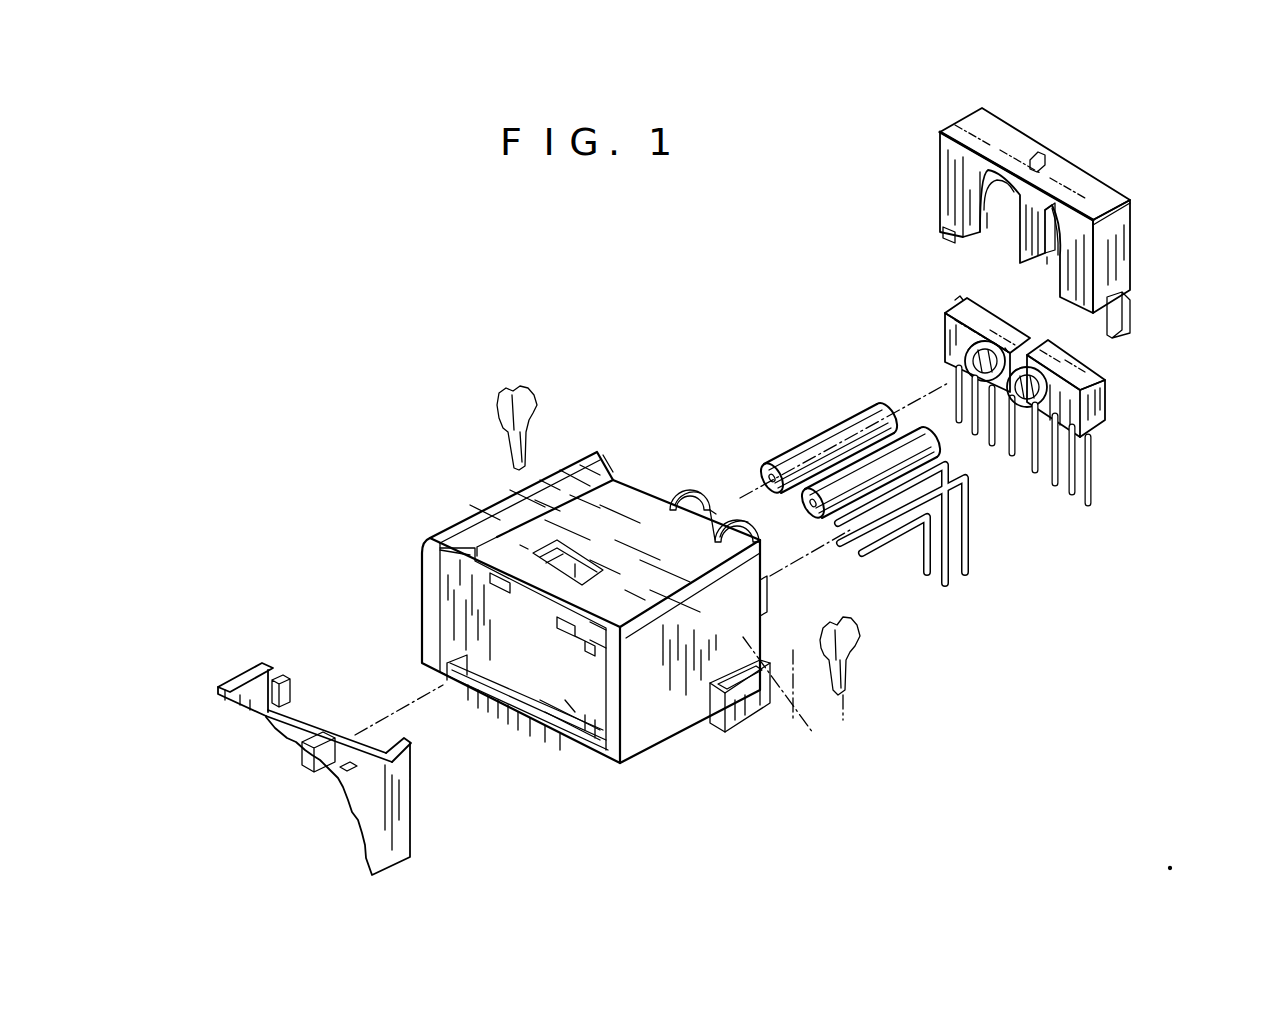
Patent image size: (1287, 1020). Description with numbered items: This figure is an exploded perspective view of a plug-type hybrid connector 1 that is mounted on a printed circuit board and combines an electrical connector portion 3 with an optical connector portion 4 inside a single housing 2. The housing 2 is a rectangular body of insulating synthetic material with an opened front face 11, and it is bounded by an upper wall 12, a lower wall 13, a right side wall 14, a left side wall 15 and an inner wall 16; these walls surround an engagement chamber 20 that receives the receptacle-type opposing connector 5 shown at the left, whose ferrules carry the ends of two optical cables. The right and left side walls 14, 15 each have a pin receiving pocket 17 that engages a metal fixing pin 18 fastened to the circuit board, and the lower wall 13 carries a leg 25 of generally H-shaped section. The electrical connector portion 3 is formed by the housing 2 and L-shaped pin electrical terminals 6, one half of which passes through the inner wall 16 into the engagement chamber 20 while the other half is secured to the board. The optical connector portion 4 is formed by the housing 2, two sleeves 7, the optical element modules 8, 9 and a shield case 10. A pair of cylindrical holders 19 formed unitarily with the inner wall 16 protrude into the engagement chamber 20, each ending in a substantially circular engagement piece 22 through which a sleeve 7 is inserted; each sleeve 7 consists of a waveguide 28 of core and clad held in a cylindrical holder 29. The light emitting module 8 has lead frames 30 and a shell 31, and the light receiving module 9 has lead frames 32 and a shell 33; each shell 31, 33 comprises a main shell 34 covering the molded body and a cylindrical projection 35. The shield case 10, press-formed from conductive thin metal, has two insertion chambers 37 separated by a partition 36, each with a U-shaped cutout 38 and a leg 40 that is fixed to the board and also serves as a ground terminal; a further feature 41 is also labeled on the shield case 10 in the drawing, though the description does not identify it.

The hybrid connector 1 is at (778, 178).
The housing 2 is at (580, 621).
The electrical connector portion 3 is at (915, 598).
The optical connector portion 4 is at (842, 373).
The opposing connector 5 is at (240, 668).
The electrical terminal 6 is at (975, 532).
The sleeve 7 is at (836, 476).
The optical element module 8 is at (1108, 410).
The optical element module 9 is at (947, 310).
The shield case 10 is at (1041, 209).
The opened front face 11 is at (553, 723).
The upper wall 12 is at (593, 487).
The lower wall 13 is at (600, 748).
The right side wall 14 is at (673, 713).
The left side wall 15 is at (453, 593).
The inner wall 16 is at (655, 497).
The pin receiving pocket 17 is at (740, 703).
The fixing pin 18 is at (515, 392).
The cylindrical holder 19 is at (683, 505).
The engagement chamber 20 is at (547, 672).
The engagement piece 22 is at (706, 512).
The leg 25 is at (768, 593).
The waveguide 28 is at (840, 493).
The cylindrical holder 29 is at (822, 433).
The lead frame 30 is at (1095, 476).
The shell 31 is at (1126, 427).
The lead frame 32 is at (997, 432).
The shell 33 is at (1001, 377).
The main shell 34 is at (958, 333).
The cylindrical projection 35 is at (966, 358).
The partition 36 is at (1045, 208).
The insertion chamber 37 is at (947, 165).
The U-shaped cutout 38 is at (990, 175).
The leg 40 is at (948, 232).
The groove 41 is at (987, 213).